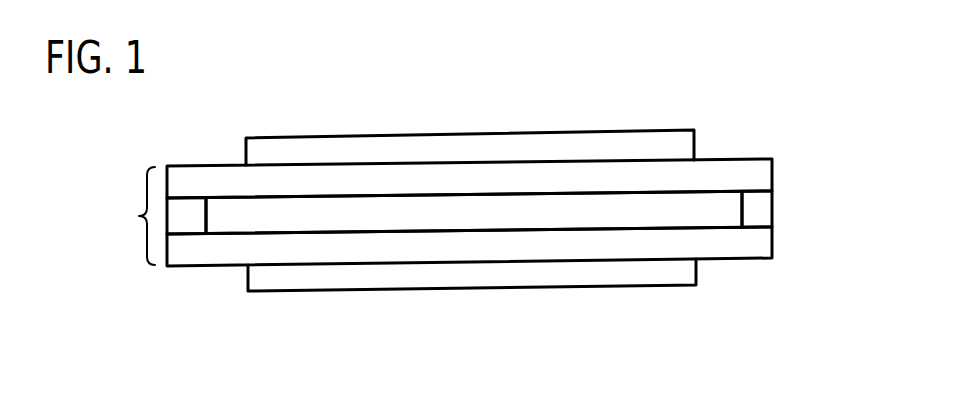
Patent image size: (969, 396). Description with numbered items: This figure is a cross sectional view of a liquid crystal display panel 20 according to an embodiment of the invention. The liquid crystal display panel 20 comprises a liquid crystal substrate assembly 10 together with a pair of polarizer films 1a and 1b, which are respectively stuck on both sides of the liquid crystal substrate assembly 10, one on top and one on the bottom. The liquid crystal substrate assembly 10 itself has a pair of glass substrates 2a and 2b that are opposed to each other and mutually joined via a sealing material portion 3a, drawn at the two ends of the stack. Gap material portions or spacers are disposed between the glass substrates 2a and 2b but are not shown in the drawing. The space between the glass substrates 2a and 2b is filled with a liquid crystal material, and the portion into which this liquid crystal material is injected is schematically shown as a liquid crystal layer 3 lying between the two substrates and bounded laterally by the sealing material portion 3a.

The polarizer film 1a is at (435, 137).
The polarizer film 1b is at (422, 273).
The glass substrate 2a is at (763, 175).
The glass substrate 2b is at (763, 245).
The liquid crystal layer 3 is at (588, 213).
The sealing material portion 3a is at (188, 218).
The liquid crystal substrate assembly 10 is at (130, 216).
The liquid crystal display panel 20 is at (770, 78).